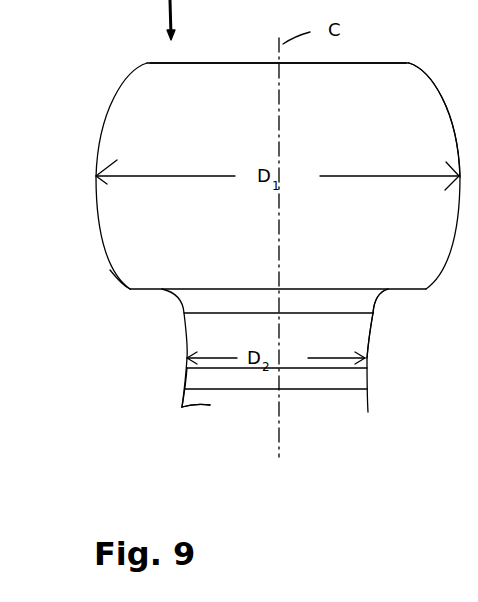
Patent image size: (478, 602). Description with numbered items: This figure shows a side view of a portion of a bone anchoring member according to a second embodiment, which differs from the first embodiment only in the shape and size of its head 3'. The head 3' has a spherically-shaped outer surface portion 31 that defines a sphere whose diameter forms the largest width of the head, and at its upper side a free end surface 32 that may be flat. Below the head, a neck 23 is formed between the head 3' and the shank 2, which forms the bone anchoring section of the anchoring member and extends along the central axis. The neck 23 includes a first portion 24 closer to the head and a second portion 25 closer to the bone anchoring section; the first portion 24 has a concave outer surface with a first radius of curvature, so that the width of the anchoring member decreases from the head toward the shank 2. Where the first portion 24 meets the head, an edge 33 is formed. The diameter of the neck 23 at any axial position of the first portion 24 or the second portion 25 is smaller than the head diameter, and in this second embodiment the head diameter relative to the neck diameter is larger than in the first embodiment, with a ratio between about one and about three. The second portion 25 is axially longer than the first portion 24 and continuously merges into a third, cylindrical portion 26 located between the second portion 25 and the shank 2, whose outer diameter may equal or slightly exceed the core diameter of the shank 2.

The shank 2 is at (222, 408).
The head 3' is at (443, 106).
The neck 23 is at (185, 352).
The first portion 24 is at (378, 302).
The second portion 25 is at (372, 343).
The cylindrical portion 26 is at (183, 380).
The spherically-shaped outer surface portion 31 is at (110, 123).
The free end surface 32 is at (368, 63).
The edge 33 is at (130, 289).